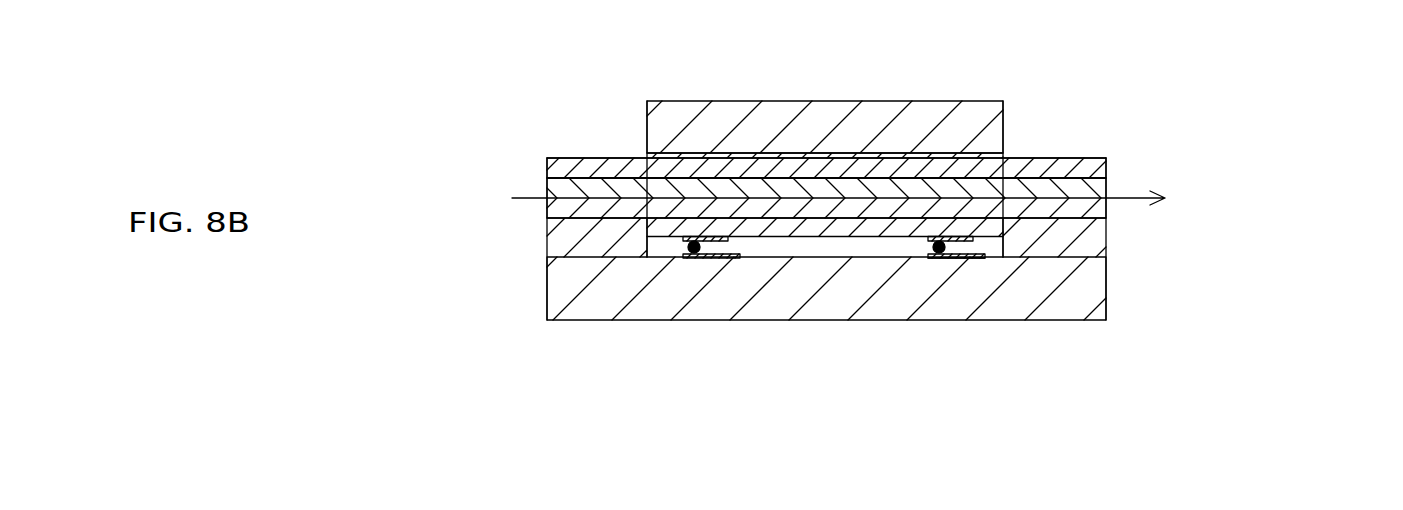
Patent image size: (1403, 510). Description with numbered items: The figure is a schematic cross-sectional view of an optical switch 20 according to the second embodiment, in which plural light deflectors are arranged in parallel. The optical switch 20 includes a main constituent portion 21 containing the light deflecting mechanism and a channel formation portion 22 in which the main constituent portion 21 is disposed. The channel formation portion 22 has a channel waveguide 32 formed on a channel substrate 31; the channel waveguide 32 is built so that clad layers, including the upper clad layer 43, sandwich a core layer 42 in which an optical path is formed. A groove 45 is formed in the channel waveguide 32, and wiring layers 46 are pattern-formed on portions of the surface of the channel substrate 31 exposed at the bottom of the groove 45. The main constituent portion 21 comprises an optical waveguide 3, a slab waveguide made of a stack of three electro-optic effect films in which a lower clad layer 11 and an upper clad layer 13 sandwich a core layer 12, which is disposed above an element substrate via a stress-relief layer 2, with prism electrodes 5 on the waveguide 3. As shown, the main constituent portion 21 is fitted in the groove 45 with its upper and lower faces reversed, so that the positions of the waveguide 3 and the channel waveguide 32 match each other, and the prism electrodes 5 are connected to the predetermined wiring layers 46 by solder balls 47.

The optical switch 20 is at (844, 201).
The main constituent portion 21 is at (815, 91).
The channel formation portion 22 is at (811, 201).
The stress-relief layer 2 is at (1003, 157).
The optical waveguide 3 is at (826, 115).
The lower clad layer 11 is at (892, 167).
The core layer 12 is at (922, 183).
The upper clad layer 13 is at (953, 230).
The channel substrate 31 is at (1090, 290).
The channel waveguide 32 is at (790, 206).
The core layer 42 is at (547, 202).
The upper clad layer 43 is at (547, 166).
The groove 45 is at (987, 258).
The wiring layers 46 is at (722, 258).
The solder balls 47 is at (692, 249).
The prism electrode 5 is at (718, 258).